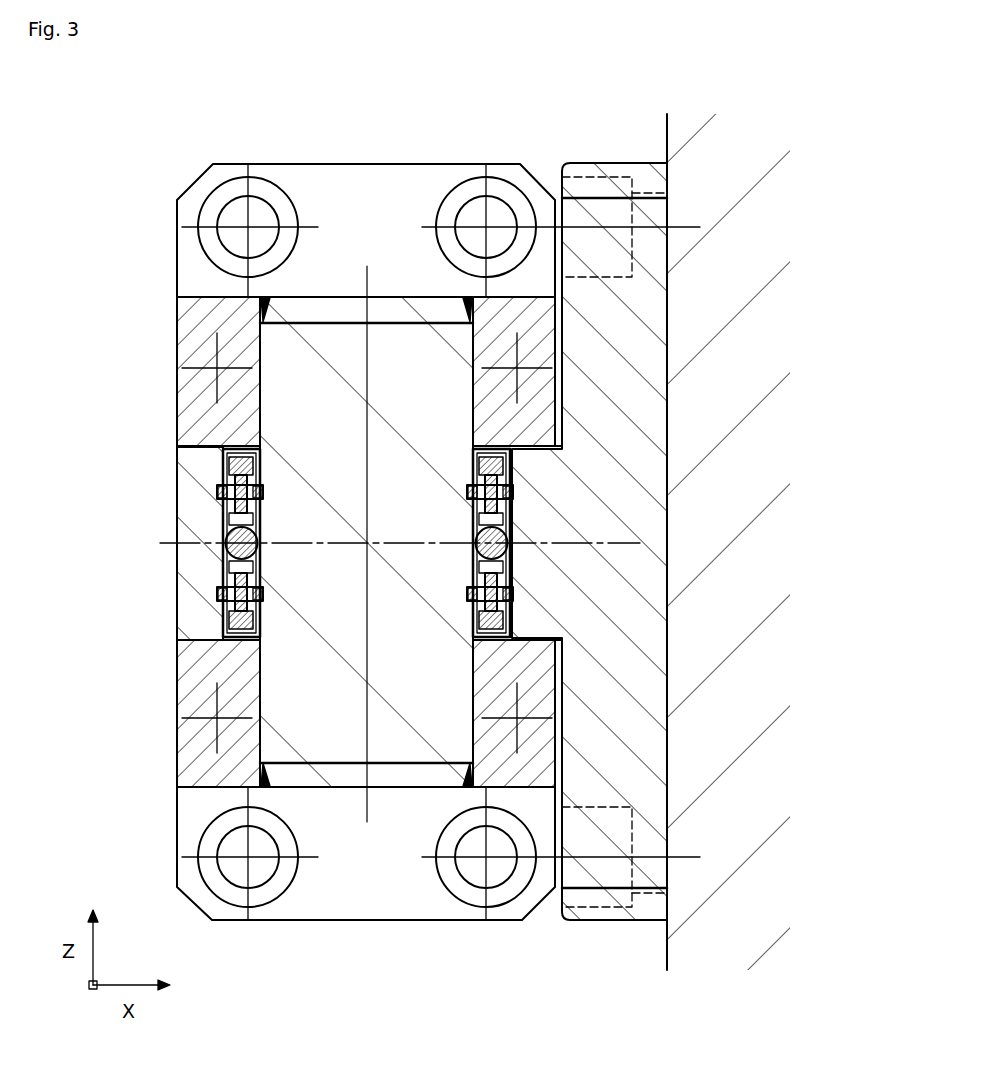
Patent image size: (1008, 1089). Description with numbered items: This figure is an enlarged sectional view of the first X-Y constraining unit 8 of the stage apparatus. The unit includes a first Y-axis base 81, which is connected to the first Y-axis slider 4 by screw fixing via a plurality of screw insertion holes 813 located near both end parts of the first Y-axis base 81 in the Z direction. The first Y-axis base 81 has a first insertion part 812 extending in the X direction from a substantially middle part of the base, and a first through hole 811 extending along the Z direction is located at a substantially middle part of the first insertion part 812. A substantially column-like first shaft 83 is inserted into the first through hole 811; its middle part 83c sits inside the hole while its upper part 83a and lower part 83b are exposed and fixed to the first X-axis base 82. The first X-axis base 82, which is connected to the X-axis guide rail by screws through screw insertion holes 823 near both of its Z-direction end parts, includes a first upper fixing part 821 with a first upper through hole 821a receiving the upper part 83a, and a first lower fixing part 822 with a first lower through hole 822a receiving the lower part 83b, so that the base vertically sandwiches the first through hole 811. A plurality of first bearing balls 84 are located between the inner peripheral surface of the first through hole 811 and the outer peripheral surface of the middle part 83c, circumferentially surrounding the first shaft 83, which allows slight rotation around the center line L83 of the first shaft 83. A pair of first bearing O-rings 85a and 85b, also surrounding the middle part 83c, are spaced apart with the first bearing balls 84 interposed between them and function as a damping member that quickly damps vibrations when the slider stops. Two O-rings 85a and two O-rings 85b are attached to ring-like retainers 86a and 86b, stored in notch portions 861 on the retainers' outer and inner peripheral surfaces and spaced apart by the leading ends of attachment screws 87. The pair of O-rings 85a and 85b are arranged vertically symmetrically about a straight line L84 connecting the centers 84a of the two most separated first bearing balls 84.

The first X-Y constraining unit 8 is at (163, 157).
The first Y-axis slider 4 is at (720, 820).
The first Y-axis base 81 is at (620, 418).
The first through hole 811 is at (262, 500).
The first insertion part 812 is at (200, 500).
The screw insertion holes 813 is at (598, 177).
The first X-axis base 82 is at (205, 269).
The first upper fixing part 821 is at (195, 352).
The first upper through hole 821a is at (262, 380).
The first lower fixing part 822 is at (195, 735).
The first lower through hole 822a is at (262, 707).
The screw insertion holes 823 is at (248, 164).
The first shaft 83 is at (456, 378).
The upper part of the first shaft 83a is at (410, 379).
The lower part of the first shaft 83b is at (380, 705).
The middle part of the first shaft 83c is at (420, 573).
The center line of the first shaft L83 is at (369, 532).
The first bearing balls 84 is at (235, 548).
The centers of the first bearing balls 84a is at (240, 528).
The straight line connecting ball centers L84 is at (155, 544).
The first bearing O-ring 85a is at (215, 470).
The first bearing O-ring 85b is at (215, 618).
The retainer 86a is at (262, 516).
The retainer 86b is at (262, 570).
The notch portions 861 is at (225, 600).
The attachment screws 87 is at (222, 455).